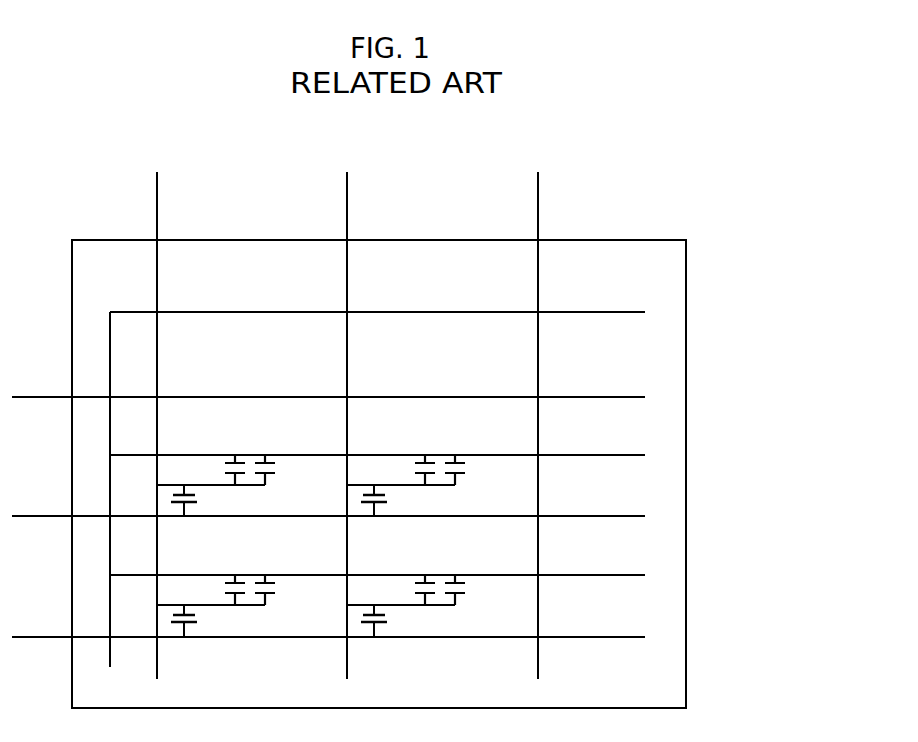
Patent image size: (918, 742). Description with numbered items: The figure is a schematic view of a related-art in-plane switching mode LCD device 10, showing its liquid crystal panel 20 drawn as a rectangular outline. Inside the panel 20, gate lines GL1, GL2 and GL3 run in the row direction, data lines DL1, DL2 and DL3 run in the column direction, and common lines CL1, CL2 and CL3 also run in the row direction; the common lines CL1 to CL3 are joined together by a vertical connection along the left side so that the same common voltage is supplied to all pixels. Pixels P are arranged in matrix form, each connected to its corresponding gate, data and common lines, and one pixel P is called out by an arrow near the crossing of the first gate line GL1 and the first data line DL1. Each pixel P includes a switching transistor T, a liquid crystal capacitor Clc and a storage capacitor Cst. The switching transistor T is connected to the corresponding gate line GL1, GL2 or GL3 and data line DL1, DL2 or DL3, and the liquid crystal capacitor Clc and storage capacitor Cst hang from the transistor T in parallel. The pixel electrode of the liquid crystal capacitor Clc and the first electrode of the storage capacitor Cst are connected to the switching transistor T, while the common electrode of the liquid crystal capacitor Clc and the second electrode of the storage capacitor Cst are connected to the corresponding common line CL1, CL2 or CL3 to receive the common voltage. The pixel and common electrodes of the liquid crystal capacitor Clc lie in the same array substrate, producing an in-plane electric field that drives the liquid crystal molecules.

The LCD device 10 is at (626, 178).
The liquid crystal panel 20 is at (686, 530).
The data line DL1 is at (136, 425).
The data line DL2 is at (327, 425).
The data line DL3 is at (515, 425).
The gate line GL1 is at (328, 386).
The gate line GL2 is at (328, 505).
The gate line GL3 is at (328, 626).
The common line CL1 is at (395, 310).
The common line CL2 is at (396, 455).
The common line CL3 is at (393, 575).
The pixel P is at (177, 413).
The switching transistor T is at (211, 500).
The liquid crystal capacitor Clc is at (230, 460).
The storage capacitor Cst is at (270, 460).